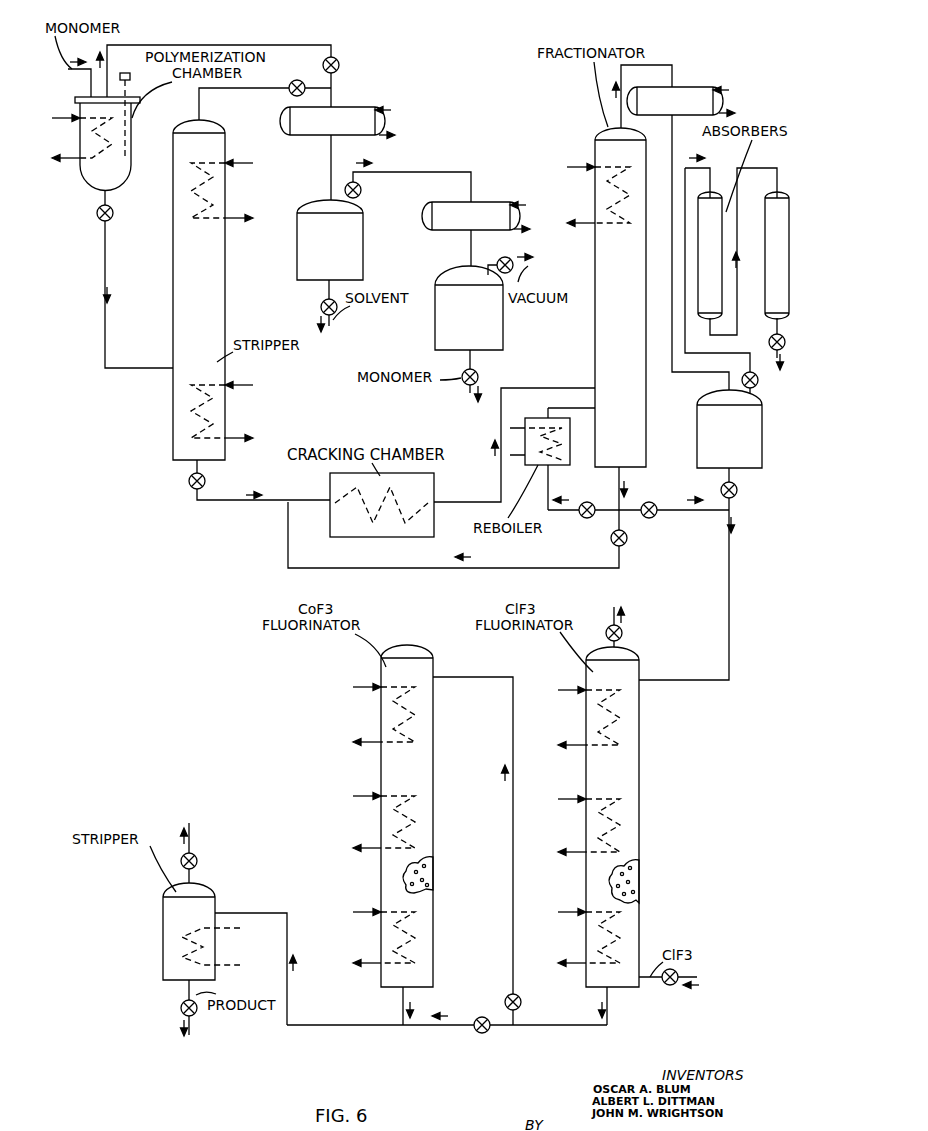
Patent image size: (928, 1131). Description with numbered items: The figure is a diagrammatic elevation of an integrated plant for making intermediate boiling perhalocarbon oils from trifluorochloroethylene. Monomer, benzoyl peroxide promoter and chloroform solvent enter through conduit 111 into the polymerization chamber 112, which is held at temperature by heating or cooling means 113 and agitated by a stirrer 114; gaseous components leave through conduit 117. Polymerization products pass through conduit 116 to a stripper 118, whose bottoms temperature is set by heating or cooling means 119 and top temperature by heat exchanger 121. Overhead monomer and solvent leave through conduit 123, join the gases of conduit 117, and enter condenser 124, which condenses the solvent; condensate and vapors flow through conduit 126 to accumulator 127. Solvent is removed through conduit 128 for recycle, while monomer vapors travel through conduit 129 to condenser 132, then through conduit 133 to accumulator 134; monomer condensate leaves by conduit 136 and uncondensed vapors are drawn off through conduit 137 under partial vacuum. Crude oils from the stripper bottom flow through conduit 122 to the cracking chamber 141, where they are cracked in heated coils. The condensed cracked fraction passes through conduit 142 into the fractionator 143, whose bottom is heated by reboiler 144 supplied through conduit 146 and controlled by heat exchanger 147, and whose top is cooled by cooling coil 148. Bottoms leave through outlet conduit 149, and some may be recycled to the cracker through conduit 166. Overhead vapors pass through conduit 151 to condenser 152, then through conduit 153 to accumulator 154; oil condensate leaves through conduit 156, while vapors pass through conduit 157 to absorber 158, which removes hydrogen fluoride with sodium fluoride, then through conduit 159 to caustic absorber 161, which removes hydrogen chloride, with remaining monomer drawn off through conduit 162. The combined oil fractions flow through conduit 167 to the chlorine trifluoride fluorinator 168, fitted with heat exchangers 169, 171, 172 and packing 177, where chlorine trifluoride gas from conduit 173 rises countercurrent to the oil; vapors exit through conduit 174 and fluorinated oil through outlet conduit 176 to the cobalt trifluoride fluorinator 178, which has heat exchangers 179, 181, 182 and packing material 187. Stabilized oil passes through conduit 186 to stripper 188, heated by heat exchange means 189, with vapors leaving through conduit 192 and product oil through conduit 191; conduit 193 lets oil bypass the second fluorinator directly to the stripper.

The conduit 111 is at (72, 72).
The polymerization chamber 112 is at (93, 180).
The heating or cooling means 113 is at (72, 120).
The stirrer 114 is at (131, 80).
The conduit 116 is at (108, 265).
The conduit 117 is at (109, 74).
The stripper 118 is at (216, 308).
The heating or cooling means 119 is at (236, 384).
The cooling or heating means 121 is at (231, 162).
The conduit 122 is at (268, 503).
The conduit 123 is at (268, 90).
The condenser 124 is at (342, 108).
The conduit 126 is at (328, 165).
The accumulator 127 is at (300, 249).
The conduit 128 is at (322, 302).
The conduit 129 is at (364, 178).
The condenser 132 is at (480, 204).
The conduit 133 is at (469, 240).
The accumulator 134 is at (437, 320).
The conduit 136 is at (474, 358).
The conduit 137 is at (500, 260).
The cracking chamber 141 is at (334, 488).
The conduit 142 is at (446, 504).
The fractionator 143 is at (638, 430).
The reboiler 144 is at (540, 420).
The conduit 146 is at (548, 486).
The heat exchanger 147 is at (523, 458).
The cooling coil 148 is at (576, 168).
The outlet conduit 149 is at (634, 516).
The conduit 151 is at (670, 63).
The condenser 152 is at (680, 90).
The conduit 153 is at (672, 150).
The accumulator 154 is at (698, 451).
The conduit 156 is at (737, 503).
The conduit 157 is at (710, 166).
The absorber 158 is at (722, 205).
The conduit 159 is at (738, 297).
The absorber 161 is at (768, 210).
The conduit 162 is at (778, 333).
The conduit 166 is at (614, 548).
The conduit 167 is at (728, 610).
The chlorine trifluoride fluorinator 168 is at (632, 748).
The heat exchanger 169 is at (570, 688).
The heat exchanger 171 is at (572, 797).
The heat exchanger 172 is at (572, 912).
The conduit 173 is at (658, 980).
The conduit 174 is at (620, 645).
The outlet conduit 176 is at (512, 820).
The catalyst bed 177 is at (640, 883).
The cobalt trifluoride fluorinator 178 is at (426, 743).
The heat exchanger 179 is at (364, 686).
The heat exchanger 181 is at (355, 795).
The heat exchanger 182 is at (357, 912).
The conduit 186 is at (353, 1022).
The packing material 187 is at (434, 882).
The stripper 188 is at (216, 905).
The heat exchange means 189 is at (226, 933).
The conduit 191 is at (185, 995).
The conduit 192 is at (196, 844).
The conduit 193 is at (440, 1027).